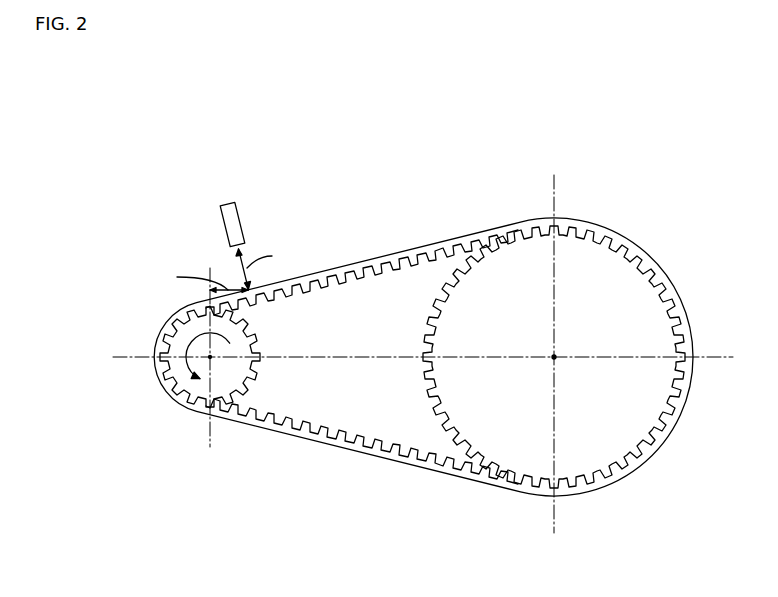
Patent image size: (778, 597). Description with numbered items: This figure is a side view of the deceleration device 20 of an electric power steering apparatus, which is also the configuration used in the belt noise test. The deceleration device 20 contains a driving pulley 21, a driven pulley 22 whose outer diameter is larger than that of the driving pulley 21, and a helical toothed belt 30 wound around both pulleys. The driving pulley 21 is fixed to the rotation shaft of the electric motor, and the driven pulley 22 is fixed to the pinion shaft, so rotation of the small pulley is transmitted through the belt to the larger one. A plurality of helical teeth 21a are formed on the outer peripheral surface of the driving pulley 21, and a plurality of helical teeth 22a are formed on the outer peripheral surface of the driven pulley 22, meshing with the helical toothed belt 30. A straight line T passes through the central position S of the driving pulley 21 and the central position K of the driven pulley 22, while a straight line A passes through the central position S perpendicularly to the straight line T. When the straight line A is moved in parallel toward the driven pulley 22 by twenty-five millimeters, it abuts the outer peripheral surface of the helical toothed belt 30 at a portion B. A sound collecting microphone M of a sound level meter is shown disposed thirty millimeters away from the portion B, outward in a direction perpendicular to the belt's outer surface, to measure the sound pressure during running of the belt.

The deceleration device 20 is at (259, 167).
The driving pulley 21 is at (232, 392).
The helical teeth 21a is at (247, 390).
The driven pulley 22 is at (515, 395).
The helical teeth 22a is at (420, 372).
The helical toothed belt 30 is at (423, 346).
The portion B is at (273, 300).
The sound collecting microphone M is at (220, 226).
The central position of the driving pulley S is at (178, 345).
The straight line A is at (212, 433).
The central position of the driven pulley K is at (556, 360).
The straight line T is at (715, 355).